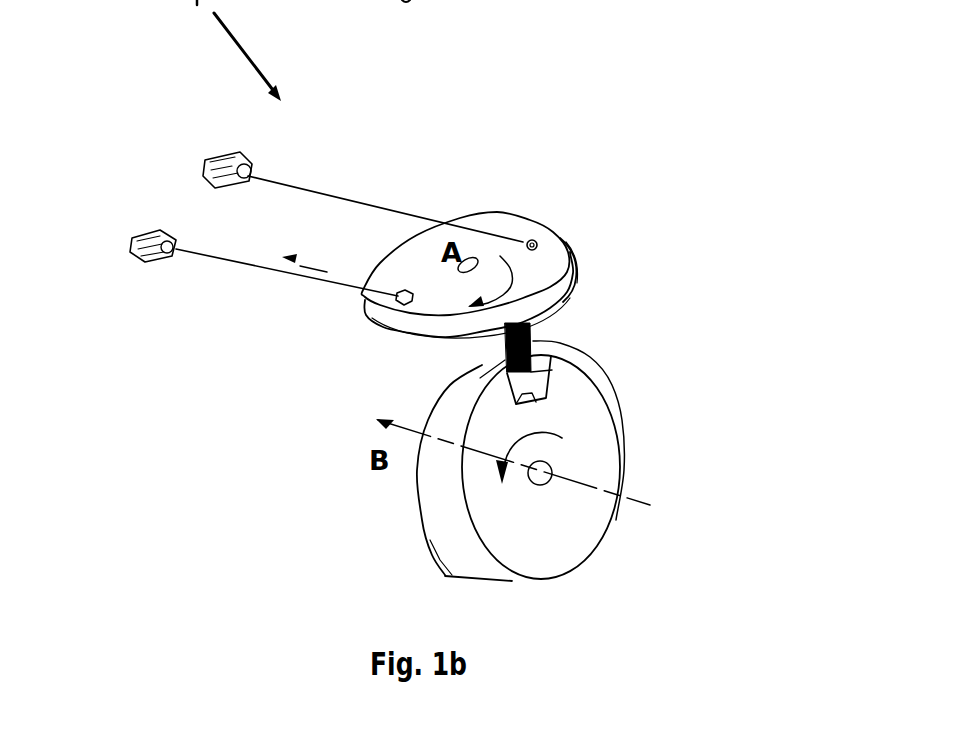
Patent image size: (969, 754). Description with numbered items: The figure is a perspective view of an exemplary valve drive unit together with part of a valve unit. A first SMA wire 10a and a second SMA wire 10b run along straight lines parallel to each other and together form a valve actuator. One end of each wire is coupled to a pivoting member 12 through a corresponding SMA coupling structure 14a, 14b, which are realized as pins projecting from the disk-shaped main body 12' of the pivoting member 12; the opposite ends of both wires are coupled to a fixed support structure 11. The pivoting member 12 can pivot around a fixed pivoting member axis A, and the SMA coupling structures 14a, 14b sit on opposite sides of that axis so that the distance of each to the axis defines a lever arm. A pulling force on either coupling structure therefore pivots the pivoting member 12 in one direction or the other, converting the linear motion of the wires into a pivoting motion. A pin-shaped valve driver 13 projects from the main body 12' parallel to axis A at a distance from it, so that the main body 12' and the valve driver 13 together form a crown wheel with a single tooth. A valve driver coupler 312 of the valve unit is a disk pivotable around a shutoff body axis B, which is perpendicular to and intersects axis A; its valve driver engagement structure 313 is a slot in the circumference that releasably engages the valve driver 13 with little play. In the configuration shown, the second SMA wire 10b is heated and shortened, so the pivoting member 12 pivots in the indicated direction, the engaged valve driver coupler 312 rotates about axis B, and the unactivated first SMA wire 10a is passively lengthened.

The first SMA wire 10a is at (332, 192).
The second SMA wire 10b is at (330, 297).
The fixed support structure 11 is at (192, 160).
The pivoting member 12 is at (468, 191).
The main body 12' is at (645, 159).
The valve driver 13 is at (530, 337).
The first SMA coupling structure 14a is at (538, 240).
The second SMA coupling structure 14b is at (393, 300).
The valve driver coupler 312 is at (583, 441).
The valve driver engagement structure 313 is at (528, 380).